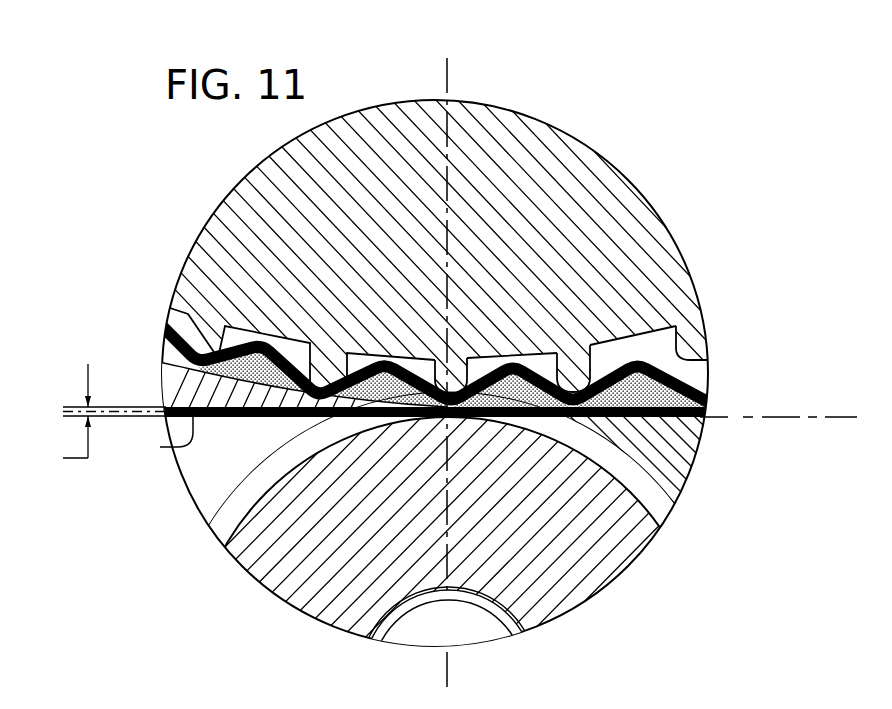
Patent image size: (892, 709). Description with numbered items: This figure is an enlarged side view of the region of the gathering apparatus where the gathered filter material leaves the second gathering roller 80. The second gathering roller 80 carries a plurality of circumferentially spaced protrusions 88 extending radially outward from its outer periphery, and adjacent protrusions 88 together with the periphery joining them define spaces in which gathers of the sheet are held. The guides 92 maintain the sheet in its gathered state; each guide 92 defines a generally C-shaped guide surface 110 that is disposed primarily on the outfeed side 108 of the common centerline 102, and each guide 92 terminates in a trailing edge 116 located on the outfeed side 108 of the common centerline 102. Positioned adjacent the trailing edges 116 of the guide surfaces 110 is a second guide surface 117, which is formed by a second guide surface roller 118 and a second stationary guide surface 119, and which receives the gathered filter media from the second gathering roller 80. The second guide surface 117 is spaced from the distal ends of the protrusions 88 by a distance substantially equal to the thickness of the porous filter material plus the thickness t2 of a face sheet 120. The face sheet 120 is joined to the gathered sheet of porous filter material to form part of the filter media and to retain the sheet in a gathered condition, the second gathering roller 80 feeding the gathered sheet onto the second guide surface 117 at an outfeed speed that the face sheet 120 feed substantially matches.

The second gathering roller 80 is at (628, 223).
The protrusions 88 is at (570, 363).
The guides 92 is at (166, 381).
The common centerline 102 is at (449, 76).
The outfeed side 108 is at (447, 418).
The guide surface 110 is at (255, 362).
The trailing edge 116 is at (346, 428).
The second guide surface 117 is at (790, 417).
The second guide surface roller 118 is at (273, 578).
The second stationary guide surface 119 is at (686, 438).
The face sheet 120 is at (172, 447).
The thickness of face sheet t2 is at (97, 418).